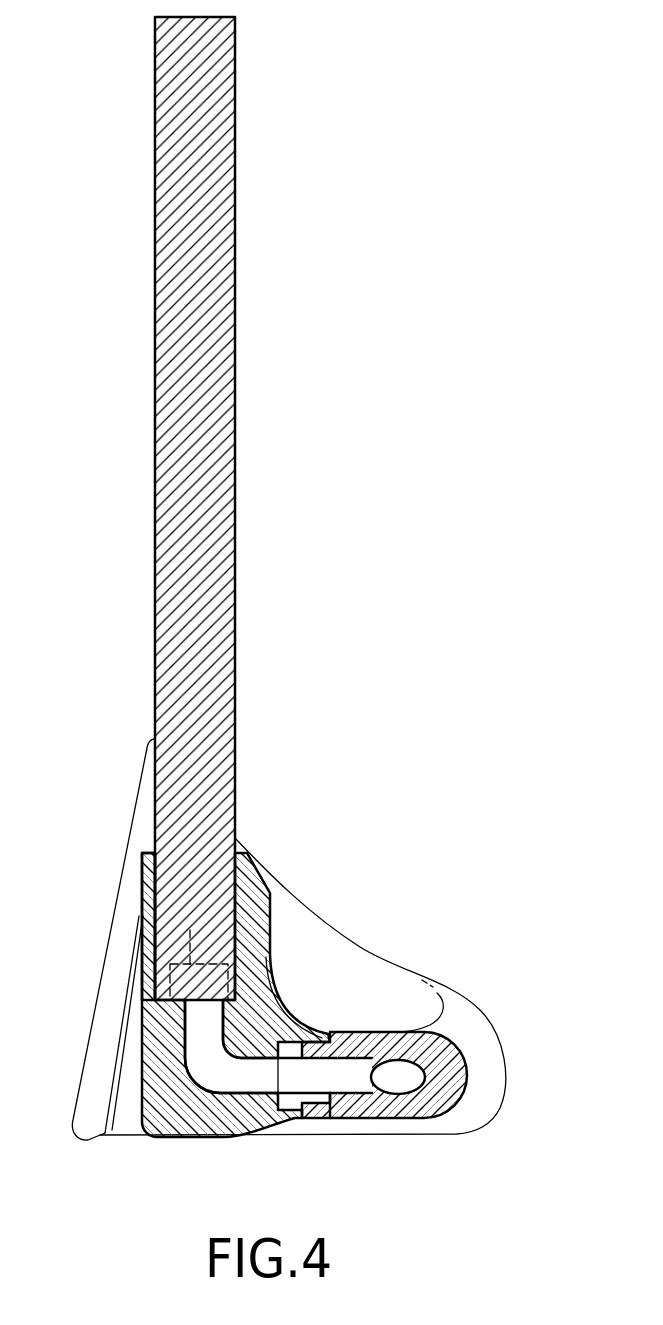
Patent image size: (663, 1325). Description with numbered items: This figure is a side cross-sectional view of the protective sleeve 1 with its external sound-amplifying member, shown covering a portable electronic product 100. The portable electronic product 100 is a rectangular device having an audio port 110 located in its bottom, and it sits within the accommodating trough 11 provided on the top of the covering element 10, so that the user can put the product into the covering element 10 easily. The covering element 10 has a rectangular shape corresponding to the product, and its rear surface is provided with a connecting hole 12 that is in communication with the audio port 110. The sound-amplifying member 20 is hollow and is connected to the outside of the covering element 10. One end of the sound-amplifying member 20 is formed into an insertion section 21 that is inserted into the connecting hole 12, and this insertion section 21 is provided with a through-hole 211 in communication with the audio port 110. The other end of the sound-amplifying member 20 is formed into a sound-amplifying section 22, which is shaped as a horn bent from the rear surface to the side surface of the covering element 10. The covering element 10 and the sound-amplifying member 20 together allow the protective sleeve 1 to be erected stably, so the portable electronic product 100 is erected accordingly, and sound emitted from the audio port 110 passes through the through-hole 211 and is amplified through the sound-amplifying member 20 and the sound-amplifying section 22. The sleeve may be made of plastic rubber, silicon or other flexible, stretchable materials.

The protective sleeve 1 is at (460, 993).
The covering element 10 is at (197, 1009).
The accommodating trough 11 is at (155, 887).
The connecting hole 12 is at (222, 1072).
The sound-amplifying member 20 is at (378, 1033).
The insertion section 21 is at (378, 1119).
The through-hole 211 is at (332, 1077).
The sound-amplifying section 22 is at (128, 943).
The portable electronic product 100 is at (217, 284).
The audio port 110 is at (190, 928).